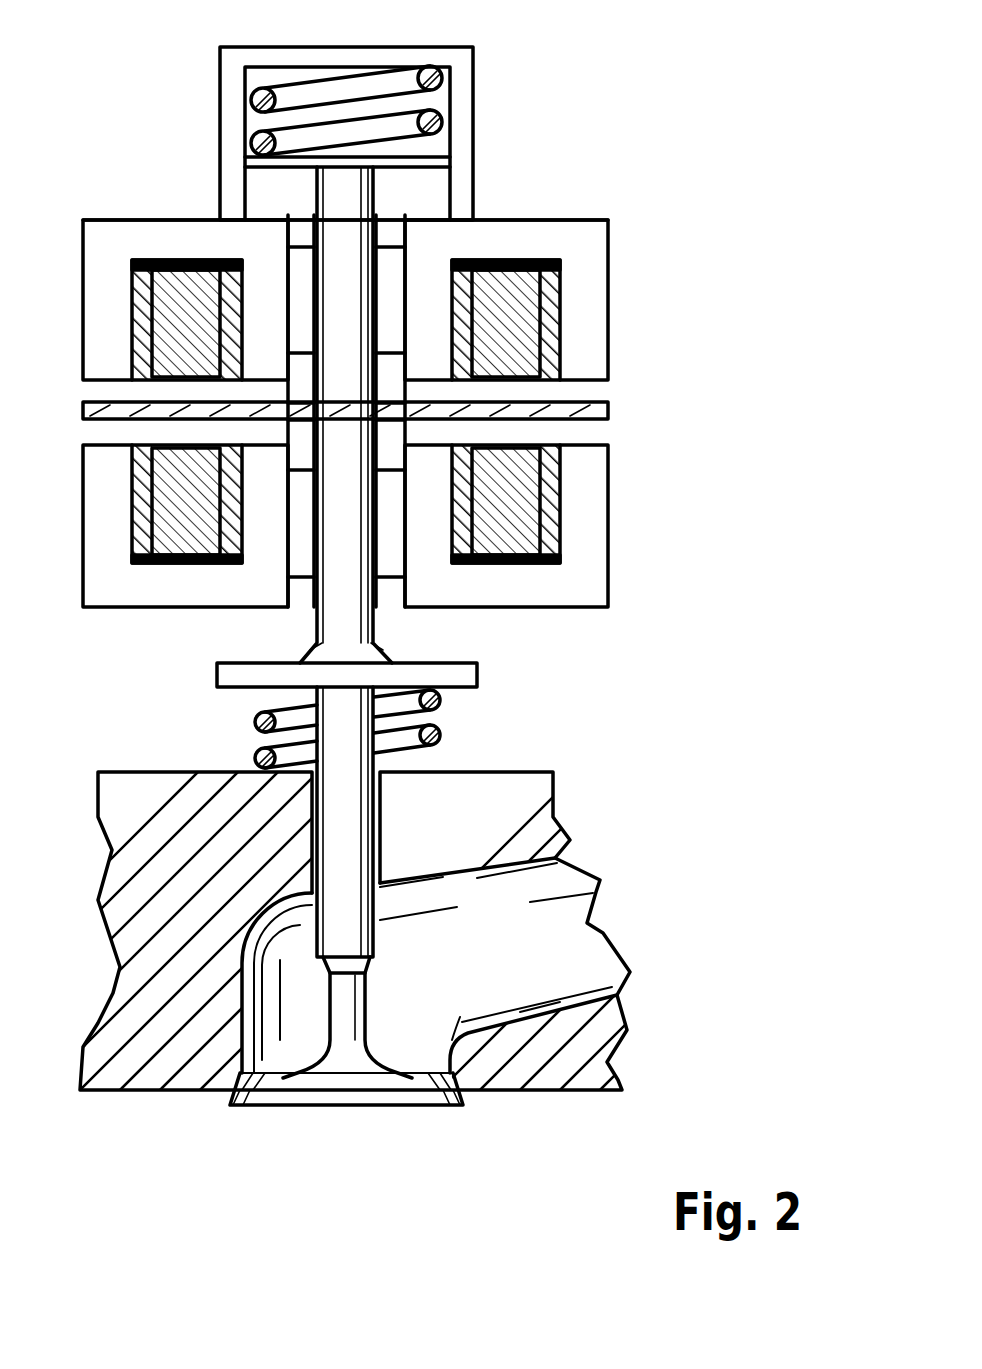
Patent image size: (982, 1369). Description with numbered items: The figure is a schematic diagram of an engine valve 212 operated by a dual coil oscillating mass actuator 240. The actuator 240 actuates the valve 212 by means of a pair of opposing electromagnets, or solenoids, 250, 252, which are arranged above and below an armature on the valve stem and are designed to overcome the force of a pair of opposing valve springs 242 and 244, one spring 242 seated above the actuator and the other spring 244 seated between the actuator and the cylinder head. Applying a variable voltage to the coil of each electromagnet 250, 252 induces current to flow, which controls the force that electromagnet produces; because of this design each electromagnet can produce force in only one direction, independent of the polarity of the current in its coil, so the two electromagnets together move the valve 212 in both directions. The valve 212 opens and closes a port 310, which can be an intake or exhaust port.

The engine valve 212 is at (350, 1010).
The dual coil oscillating mass actuator 240 is at (418, 384).
The valve spring 242 is at (385, 75).
The valve spring 244 is at (445, 735).
The electromagnet 250 is at (583, 250).
The electromagnet 252 is at (595, 532).
The port 310 is at (575, 943).